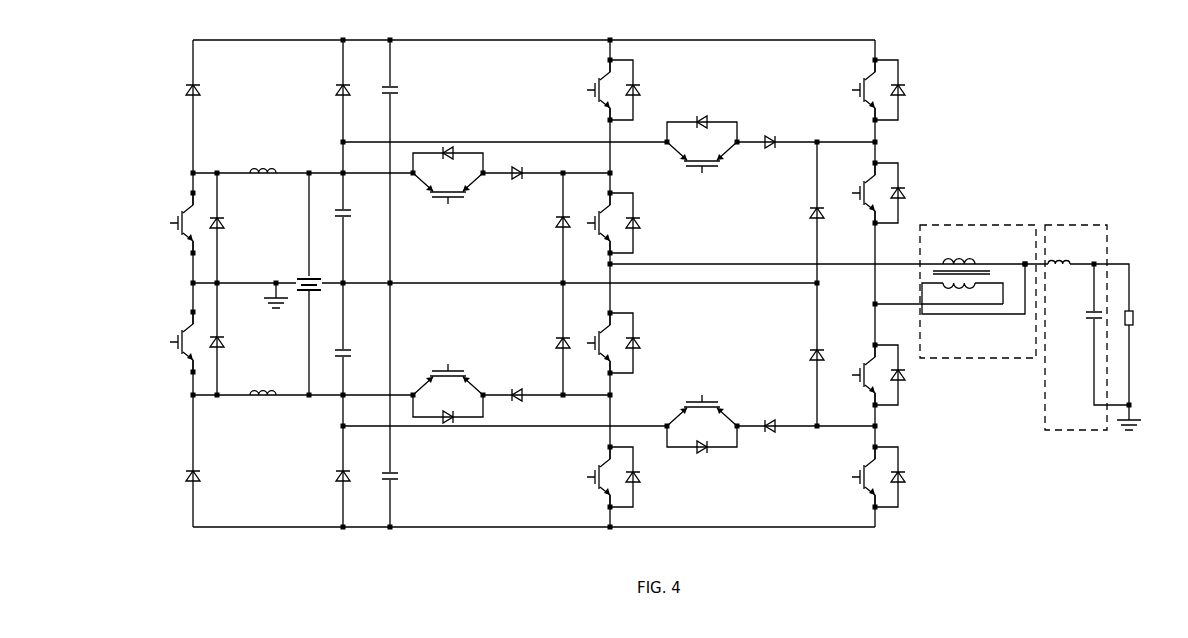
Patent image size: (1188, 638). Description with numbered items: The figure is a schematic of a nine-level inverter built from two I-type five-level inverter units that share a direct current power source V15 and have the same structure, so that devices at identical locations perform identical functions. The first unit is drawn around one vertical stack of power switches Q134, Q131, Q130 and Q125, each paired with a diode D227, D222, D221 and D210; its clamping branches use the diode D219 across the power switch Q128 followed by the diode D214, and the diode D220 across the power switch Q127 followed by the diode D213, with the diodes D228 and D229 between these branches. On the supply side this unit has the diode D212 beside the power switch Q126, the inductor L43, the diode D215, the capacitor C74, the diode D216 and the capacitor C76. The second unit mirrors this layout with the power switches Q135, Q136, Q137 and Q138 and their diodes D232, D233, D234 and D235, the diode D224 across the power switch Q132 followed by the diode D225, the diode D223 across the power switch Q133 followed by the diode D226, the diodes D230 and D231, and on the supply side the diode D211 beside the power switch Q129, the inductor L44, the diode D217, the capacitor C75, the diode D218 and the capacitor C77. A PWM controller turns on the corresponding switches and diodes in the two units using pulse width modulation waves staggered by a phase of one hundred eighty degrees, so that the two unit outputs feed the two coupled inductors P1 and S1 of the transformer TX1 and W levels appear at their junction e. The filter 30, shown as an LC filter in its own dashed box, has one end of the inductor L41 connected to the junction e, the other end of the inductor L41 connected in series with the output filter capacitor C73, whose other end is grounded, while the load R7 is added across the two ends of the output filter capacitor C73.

The diode D215 is at (217, 91).
The diode D216 is at (363, 82).
The capacitor C76 is at (407, 90).
The power switch Q134 is at (621, 90).
The diode D227 is at (648, 90).
The power switch Q135 is at (886, 90).
The diode D232 is at (913, 90).
The diode D224 is at (702, 120).
The power switch Q132 is at (702, 151).
The diode D225 is at (775, 154).
The diode D219 is at (448, 148).
The power switch Q128 is at (448, 185).
The diode D214 is at (522, 185).
The diode D228 is at (541, 222).
The power switch Q131 is at (621, 223).
The diode D222 is at (648, 223).
The power switch Q136 is at (886, 193).
The diode D233 is at (913, 193).
The diode D230 is at (794, 213).
The transformer TX1 is at (1020, 225).
The filter 30 is at (1092, 225).
The inductor L43 is at (267, 183).
The power switch Q126 is at (204, 223).
The diode D212 is at (240, 223).
The capacitor C74 is at (359, 209).
The coupled inductor P1 is at (961, 258).
The junction e is at (1026, 254).
The coupled inductor S1 is at (962, 293).
The inductor L41 is at (1067, 276).
The output filter capacitor C73 is at (1109, 306).
The load R7 is at (1143, 319).
The power source V15 is at (319, 275).
The power switch Q129 is at (204, 342).
The diode D211 is at (240, 343).
The capacitor C75 is at (359, 351).
The diode D229 is at (541, 342).
The power switch Q130 is at (621, 343).
The diode D221 is at (648, 343).
The diode D231 is at (794, 353).
The power switch Q137 is at (886, 375).
The diode D234 is at (913, 375).
The diode D213 is at (522, 386).
The power switch Q127 is at (448, 387).
The diode D220 is at (448, 422).
The inductor L44 is at (267, 407).
The power switch Q133 is at (702, 419).
The diode D223 is at (702, 450).
The diode D226 is at (775, 416).
The diode D217 is at (217, 470).
The diode D218 is at (363, 467).
The capacitor C77 is at (407, 475).
The power switch Q125 is at (621, 477).
The diode D210 is at (648, 477).
The power switch Q138 is at (886, 477).
The diode D235 is at (913, 477).